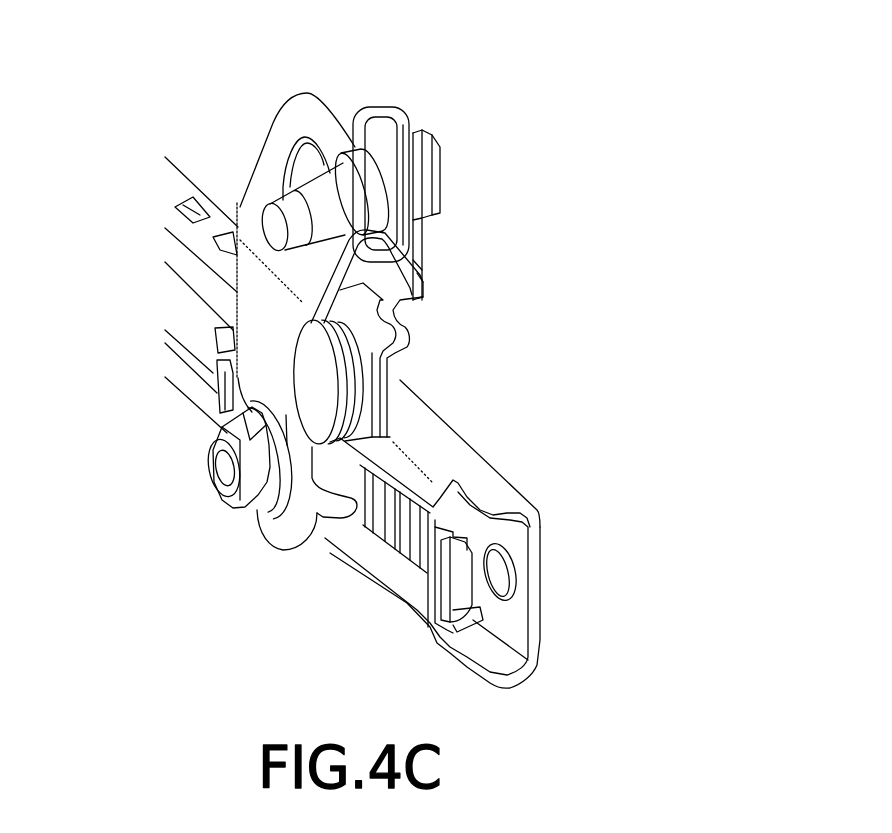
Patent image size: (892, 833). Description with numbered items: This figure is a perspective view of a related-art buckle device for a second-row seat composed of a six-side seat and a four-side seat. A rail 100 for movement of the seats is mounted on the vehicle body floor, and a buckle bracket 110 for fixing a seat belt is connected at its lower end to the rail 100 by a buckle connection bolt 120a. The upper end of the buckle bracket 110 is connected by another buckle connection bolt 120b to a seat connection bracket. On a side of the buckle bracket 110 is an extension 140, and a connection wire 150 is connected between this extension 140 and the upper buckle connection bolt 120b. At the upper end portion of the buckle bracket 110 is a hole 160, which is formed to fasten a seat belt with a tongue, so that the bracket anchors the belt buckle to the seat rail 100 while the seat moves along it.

The rail 100 is at (480, 485).
The buckle bracket 110 is at (262, 313).
The buckle connection bolt 120a is at (220, 468).
The buckle connection bolt 120b is at (333, 207).
The extension 140 is at (395, 378).
The connection wire 150 is at (385, 230).
The hole 160 is at (318, 173).